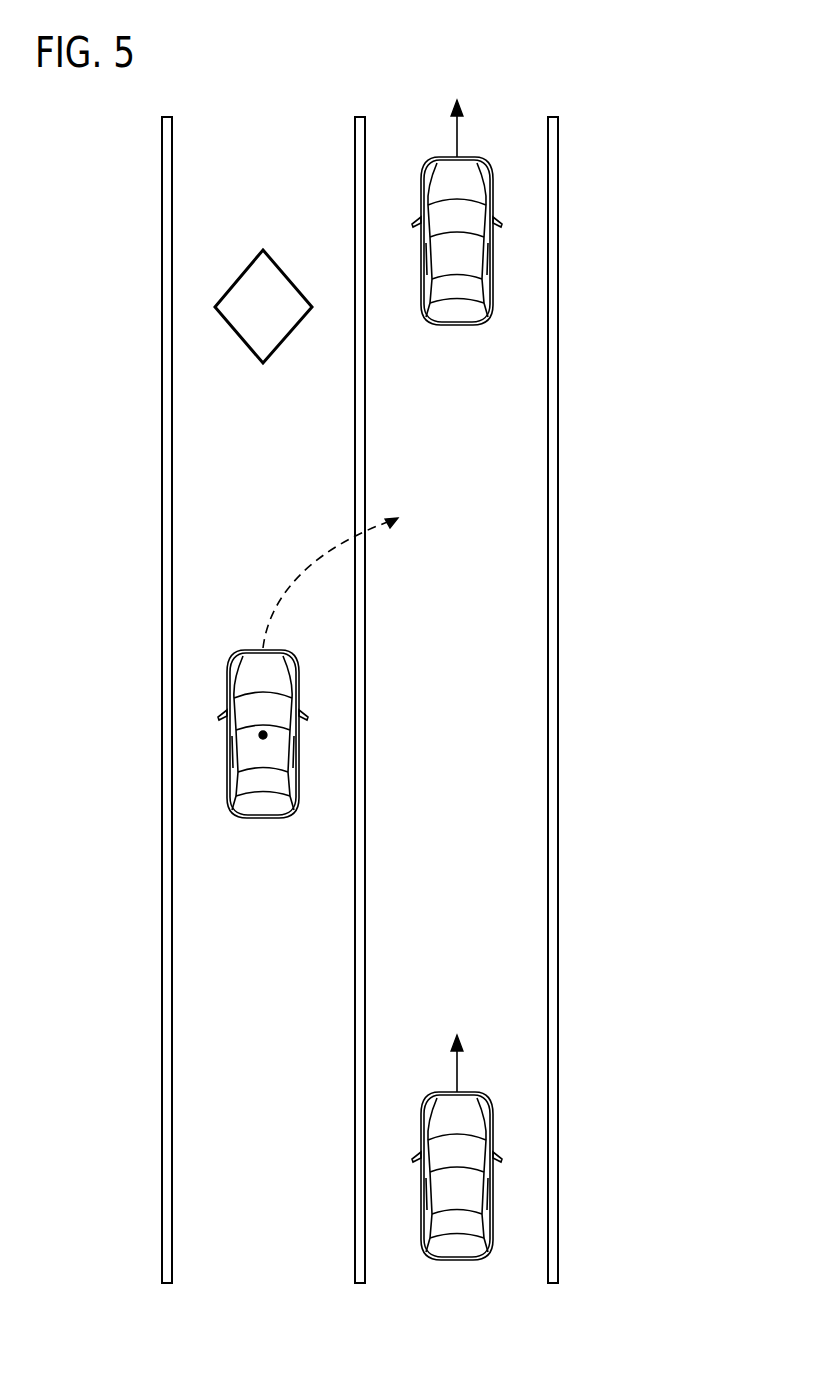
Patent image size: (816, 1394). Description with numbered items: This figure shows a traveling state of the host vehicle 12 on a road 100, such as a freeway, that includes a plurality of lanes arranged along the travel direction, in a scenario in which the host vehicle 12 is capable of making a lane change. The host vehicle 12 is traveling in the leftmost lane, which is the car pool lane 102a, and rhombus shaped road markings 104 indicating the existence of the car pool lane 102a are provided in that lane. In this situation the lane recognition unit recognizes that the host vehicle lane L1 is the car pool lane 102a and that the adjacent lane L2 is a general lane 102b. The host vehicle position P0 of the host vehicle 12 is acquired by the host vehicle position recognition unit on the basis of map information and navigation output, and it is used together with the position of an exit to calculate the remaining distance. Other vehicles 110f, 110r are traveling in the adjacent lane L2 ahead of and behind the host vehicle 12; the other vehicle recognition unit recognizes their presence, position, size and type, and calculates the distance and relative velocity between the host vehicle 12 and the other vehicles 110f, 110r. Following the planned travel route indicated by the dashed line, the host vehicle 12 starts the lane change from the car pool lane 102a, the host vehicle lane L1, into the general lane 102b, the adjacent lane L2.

The road 100 is at (360, 700).
The car pool lane 102a is at (193, 700).
The general lane 102b is at (602, 700).
The host vehicle lane L1 is at (212, 993).
The adjacent lane L2 is at (507, 1050).
The rhombus shaped road marking 104 is at (233, 283).
The other vehicle 110f is at (493, 197).
The other vehicle 110r is at (493, 1130).
The host vehicle 12 is at (297, 668).
The host vehicle position P0 is at (263, 733).